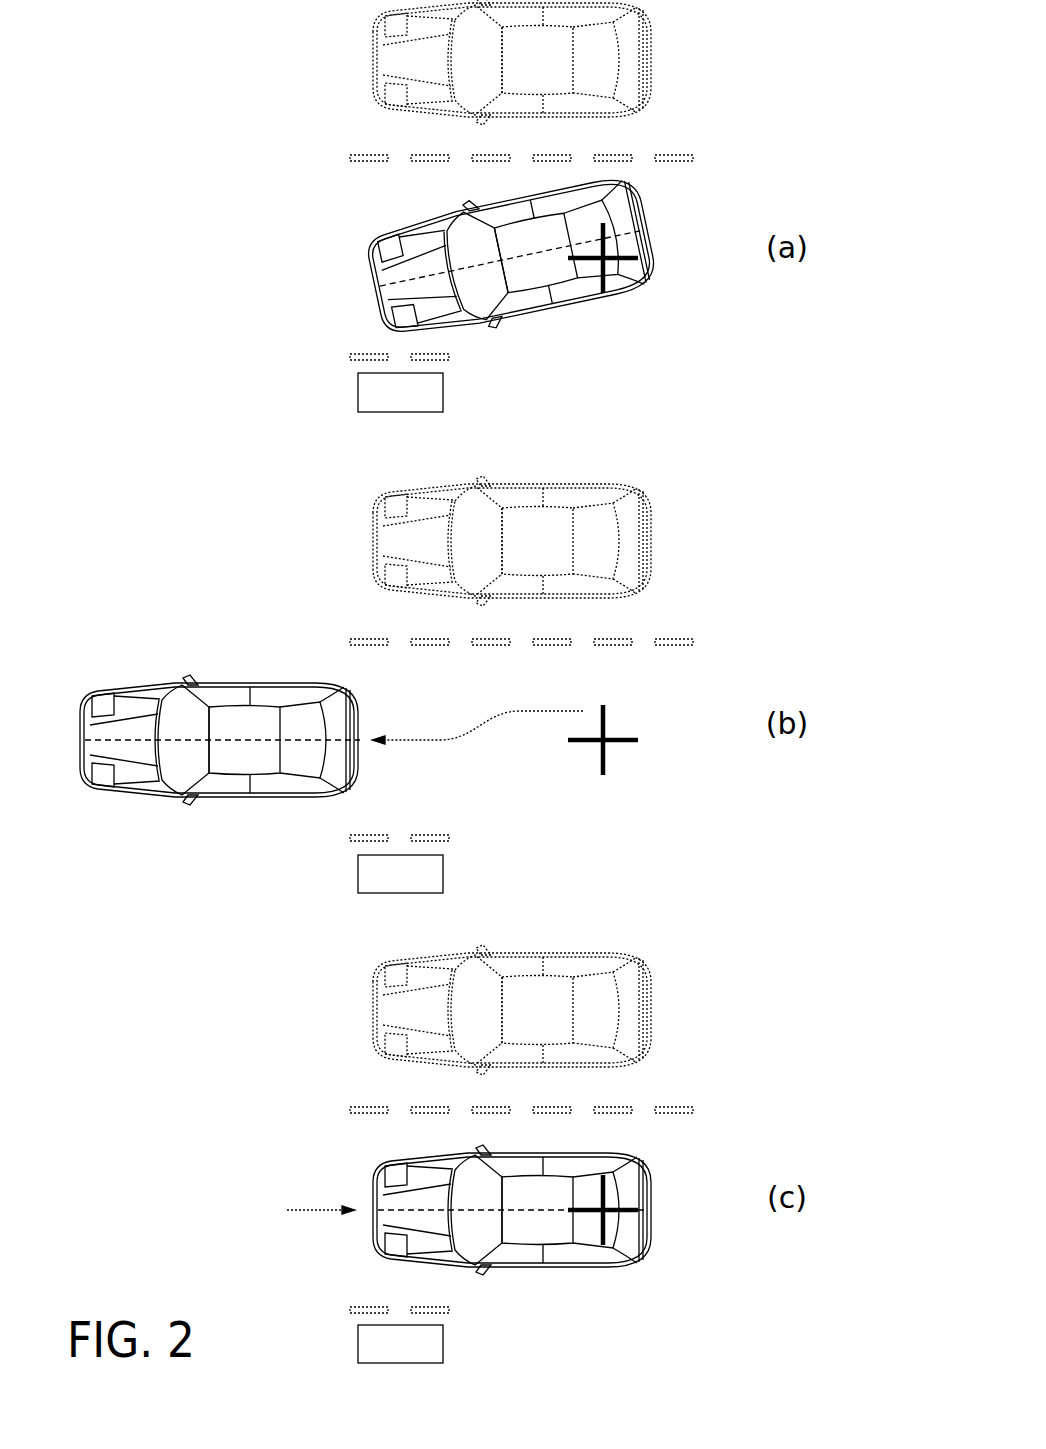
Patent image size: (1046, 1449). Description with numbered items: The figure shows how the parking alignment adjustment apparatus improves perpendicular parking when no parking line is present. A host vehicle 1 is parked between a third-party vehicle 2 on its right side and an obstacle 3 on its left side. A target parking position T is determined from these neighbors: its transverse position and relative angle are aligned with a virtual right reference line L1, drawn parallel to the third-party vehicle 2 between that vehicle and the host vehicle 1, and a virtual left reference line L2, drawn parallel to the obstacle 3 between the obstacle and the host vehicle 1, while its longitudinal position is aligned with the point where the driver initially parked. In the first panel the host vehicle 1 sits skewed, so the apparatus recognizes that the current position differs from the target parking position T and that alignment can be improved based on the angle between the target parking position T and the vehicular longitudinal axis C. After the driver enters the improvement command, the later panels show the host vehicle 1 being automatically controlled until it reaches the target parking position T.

The host vehicle 1 is at (380, 276).
The third-party vehicle 2 is at (380, 68).
The obstacle 3 is at (362, 397).
The virtual right reference line L1 is at (350, 158).
The virtual left reference line L2 is at (449, 357).
The vehicular longitudinal axis C is at (385, 300).
The target parking position T is at (642, 277).